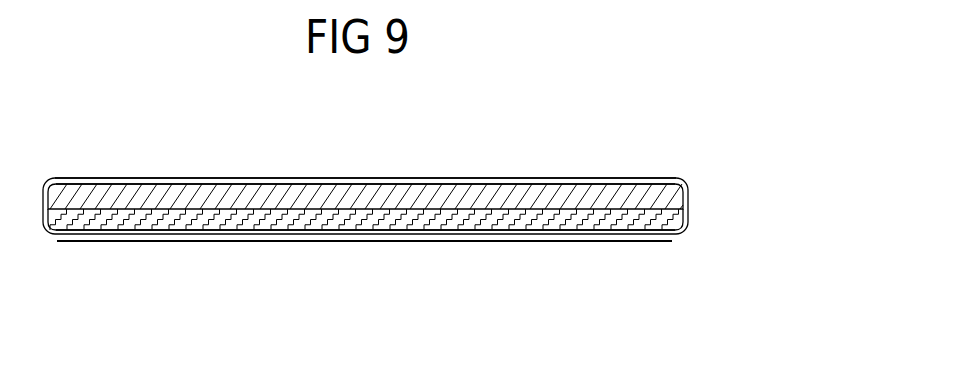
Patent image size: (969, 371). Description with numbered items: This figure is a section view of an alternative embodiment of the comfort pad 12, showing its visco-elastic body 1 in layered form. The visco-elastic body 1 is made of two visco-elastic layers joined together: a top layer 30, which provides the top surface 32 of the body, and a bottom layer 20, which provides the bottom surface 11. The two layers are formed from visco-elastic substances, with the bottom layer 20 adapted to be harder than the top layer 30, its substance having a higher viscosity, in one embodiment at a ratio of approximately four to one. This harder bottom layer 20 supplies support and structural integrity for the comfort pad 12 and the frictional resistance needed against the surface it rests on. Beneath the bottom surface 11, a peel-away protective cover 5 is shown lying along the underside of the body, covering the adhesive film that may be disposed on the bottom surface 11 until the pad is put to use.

The visco-elastic body 1 is at (692, 198).
The comfort pad 12 is at (422, 157).
The top layer 30 is at (613, 185).
The top surface 32 is at (155, 183).
The bottom surface 11 is at (153, 233).
The bottom layer 20 is at (687, 229).
The peel-away protective cover 5 is at (520, 240).